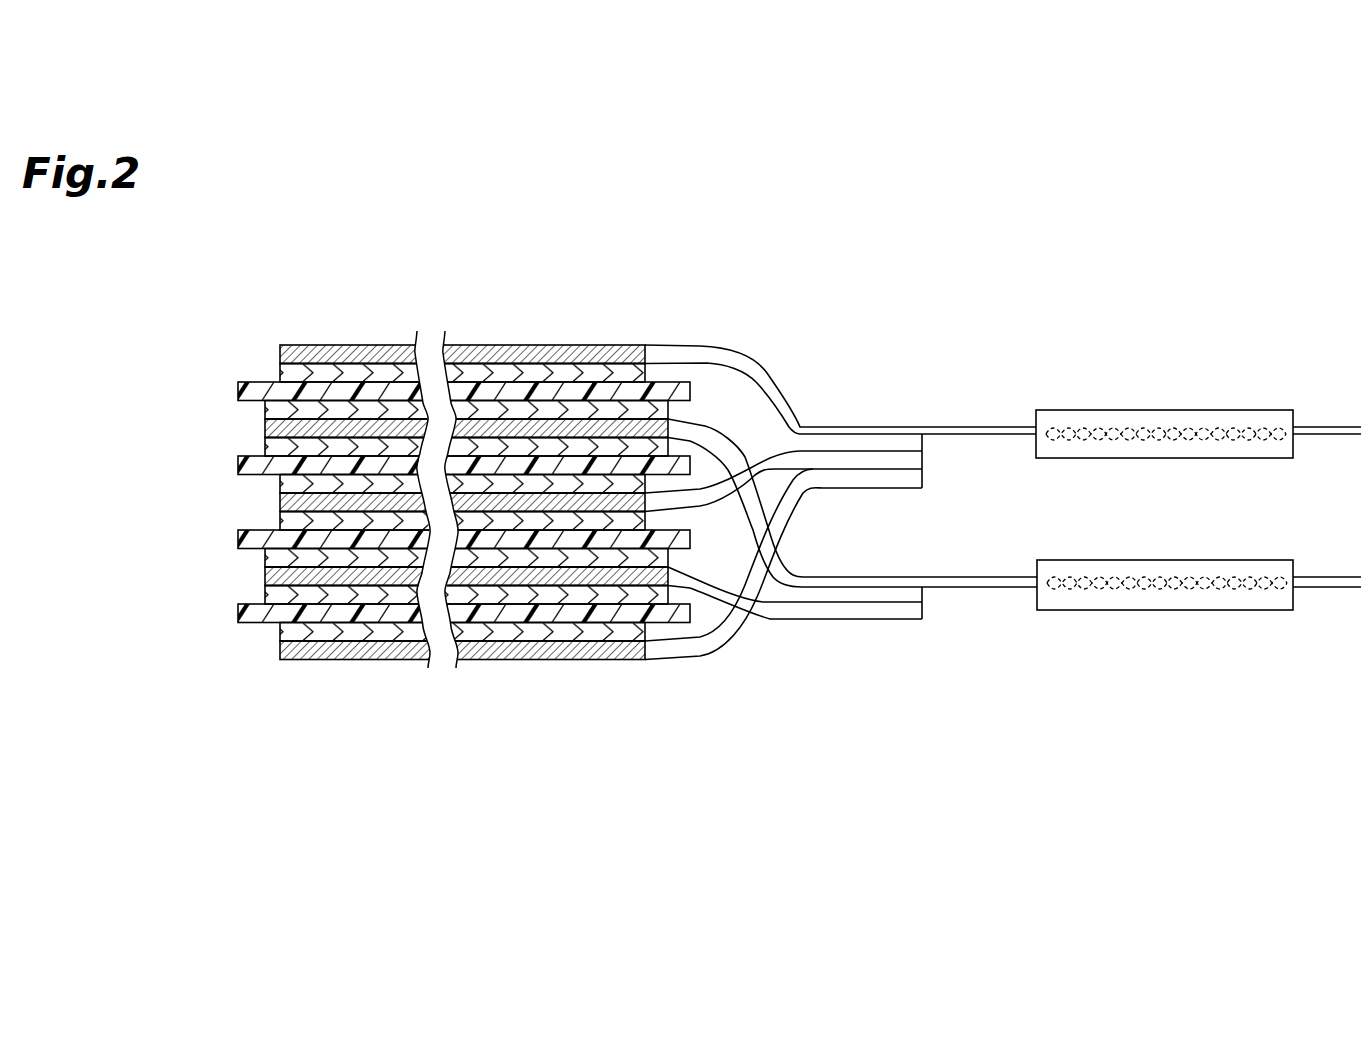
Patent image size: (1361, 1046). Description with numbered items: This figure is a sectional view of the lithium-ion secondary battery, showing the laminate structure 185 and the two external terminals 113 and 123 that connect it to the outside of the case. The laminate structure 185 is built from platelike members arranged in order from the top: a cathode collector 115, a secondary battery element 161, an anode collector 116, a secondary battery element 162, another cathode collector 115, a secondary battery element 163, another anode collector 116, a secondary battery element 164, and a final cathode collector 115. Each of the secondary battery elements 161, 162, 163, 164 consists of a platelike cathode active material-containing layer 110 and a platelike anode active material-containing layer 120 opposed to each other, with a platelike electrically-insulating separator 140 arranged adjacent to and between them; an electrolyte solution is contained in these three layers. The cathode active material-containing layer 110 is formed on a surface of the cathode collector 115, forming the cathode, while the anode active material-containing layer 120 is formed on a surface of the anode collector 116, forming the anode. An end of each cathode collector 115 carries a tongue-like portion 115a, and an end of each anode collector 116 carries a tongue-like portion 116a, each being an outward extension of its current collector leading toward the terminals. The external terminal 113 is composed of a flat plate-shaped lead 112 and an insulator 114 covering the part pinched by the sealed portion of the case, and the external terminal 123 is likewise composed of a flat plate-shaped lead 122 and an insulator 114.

The laminate structure 185 is at (677, 272).
The cathode collector 115 is at (280, 352).
The anode collector 116 is at (268, 428).
The cathode active material-containing layer 110 is at (283, 373).
The anode active material-containing layer 120 is at (270, 410).
The separator 140 is at (242, 389).
The secondary battery element 161 is at (177, 360).
The secondary battery element 162 is at (177, 435).
The secondary battery element 163 is at (177, 510).
The secondary battery element 164 is at (177, 585).
The tongue-like portion 115a is at (740, 353).
The tongue-like portion 116a is at (737, 449).
The external terminal 113 is at (1295, 372).
The external terminal 123 is at (1295, 526).
The insulator 114 is at (1250, 410).
The lead 112 is at (1327, 392).
The lead 122 is at (1327, 546).